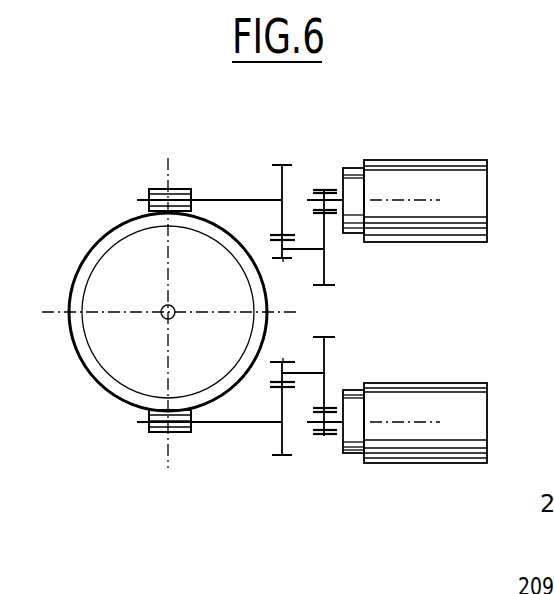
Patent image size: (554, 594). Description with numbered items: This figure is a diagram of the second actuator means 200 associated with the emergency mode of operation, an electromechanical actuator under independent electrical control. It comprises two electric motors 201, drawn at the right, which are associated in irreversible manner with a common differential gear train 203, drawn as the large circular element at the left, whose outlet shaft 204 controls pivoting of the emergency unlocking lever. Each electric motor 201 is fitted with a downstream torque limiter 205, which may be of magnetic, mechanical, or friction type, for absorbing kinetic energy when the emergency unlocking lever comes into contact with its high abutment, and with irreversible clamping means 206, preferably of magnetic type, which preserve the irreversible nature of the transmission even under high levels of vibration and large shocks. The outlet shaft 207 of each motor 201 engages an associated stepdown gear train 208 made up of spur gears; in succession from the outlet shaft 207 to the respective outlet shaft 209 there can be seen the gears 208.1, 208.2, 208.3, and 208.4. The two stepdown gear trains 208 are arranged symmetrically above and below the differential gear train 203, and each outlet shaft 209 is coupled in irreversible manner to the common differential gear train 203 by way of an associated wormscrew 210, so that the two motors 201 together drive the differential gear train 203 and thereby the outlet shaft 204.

The second actuator means 200 is at (416, 284).
The electric motor 201 is at (433, 213).
The common differential gear train 203 is at (118, 375).
The outlet shaft of the common differential gear train 204 is at (166, 318).
The torque limiter 205 is at (417, 318).
The irreversible clamping means 206 is at (355, 175).
The outlet shaft of the motor 207 is at (345, 170).
The stepdown gear train 208 is at (331, 315).
The gear 208.1 is at (323, 189).
The gear 208.2 is at (325, 262).
The gear 208.3 is at (287, 262).
The gear 208.4 is at (281, 222).
The outlet shaft of the gear train 209 is at (220, 200).
The wormscrew 210 is at (157, 189).